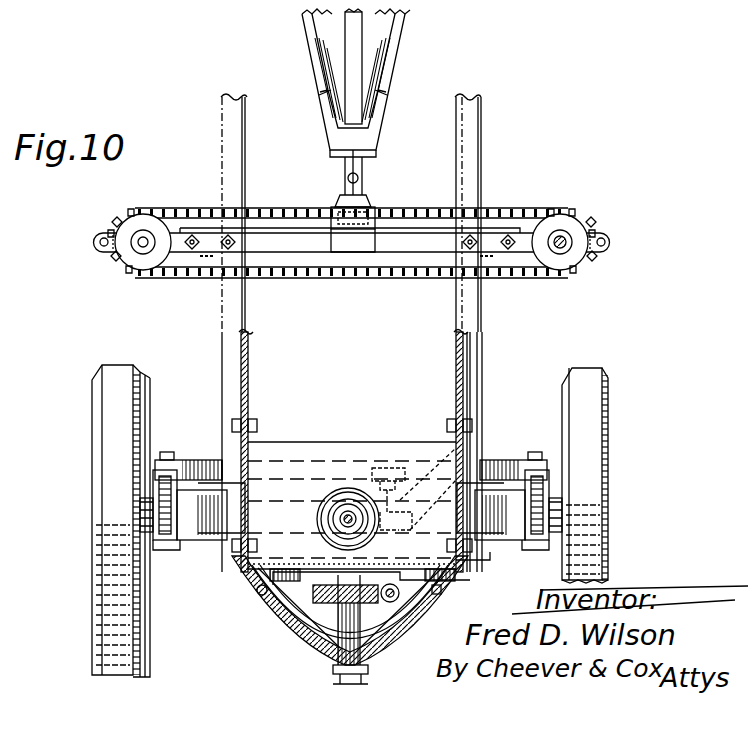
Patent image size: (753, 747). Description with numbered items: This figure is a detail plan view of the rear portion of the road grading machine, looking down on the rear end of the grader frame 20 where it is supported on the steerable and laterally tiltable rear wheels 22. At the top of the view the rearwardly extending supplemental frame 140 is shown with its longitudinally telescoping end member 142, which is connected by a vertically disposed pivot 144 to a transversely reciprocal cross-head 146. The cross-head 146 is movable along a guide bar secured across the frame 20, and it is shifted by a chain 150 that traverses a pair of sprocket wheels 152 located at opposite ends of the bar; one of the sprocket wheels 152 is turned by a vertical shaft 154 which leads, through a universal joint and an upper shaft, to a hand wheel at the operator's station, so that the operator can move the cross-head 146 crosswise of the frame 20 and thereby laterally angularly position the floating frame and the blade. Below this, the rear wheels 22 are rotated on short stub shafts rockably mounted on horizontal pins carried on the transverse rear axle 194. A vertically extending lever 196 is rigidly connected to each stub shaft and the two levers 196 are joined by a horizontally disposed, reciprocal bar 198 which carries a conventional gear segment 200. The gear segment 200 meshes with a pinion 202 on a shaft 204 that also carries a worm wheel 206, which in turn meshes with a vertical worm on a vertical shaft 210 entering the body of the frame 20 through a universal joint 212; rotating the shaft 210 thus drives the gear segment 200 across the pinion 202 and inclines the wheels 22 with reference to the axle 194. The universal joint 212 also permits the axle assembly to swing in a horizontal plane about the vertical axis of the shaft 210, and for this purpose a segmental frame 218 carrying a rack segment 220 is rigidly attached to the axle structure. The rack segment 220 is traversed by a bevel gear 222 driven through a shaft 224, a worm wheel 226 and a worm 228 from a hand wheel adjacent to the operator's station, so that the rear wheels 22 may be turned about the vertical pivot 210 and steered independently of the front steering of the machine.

The grader frame 20 is at (221, 131).
The rear wheels 22 is at (112, 406).
The supplemental frame 140 is at (382, 66).
The telescoping end member 142 is at (356, 28).
The vertically disposed pivot 144 is at (359, 179).
The cross-head 146 is at (334, 205).
The chain 150 is at (188, 206).
The sprocket wheels 152 is at (138, 265).
The vertical shaft 154 is at (568, 235).
The rear axle 194 is at (491, 567).
The lever 196 is at (158, 520).
The reciprocal bar 198 is at (200, 466).
The gear segment 200 is at (350, 466).
The pinion 202 is at (398, 468).
The shaft 204 is at (464, 445).
The worm wheel 206 is at (463, 461).
The vertical shaft 210 is at (338, 524).
The universal joint 212 is at (343, 516).
The segmental frame 218 is at (448, 575).
The rack segment 220 is at (420, 612).
The bevel gear 222 is at (330, 640).
The shaft 224 is at (336, 670).
The worm wheel 226 is at (300, 600).
The worm 228 is at (368, 576).